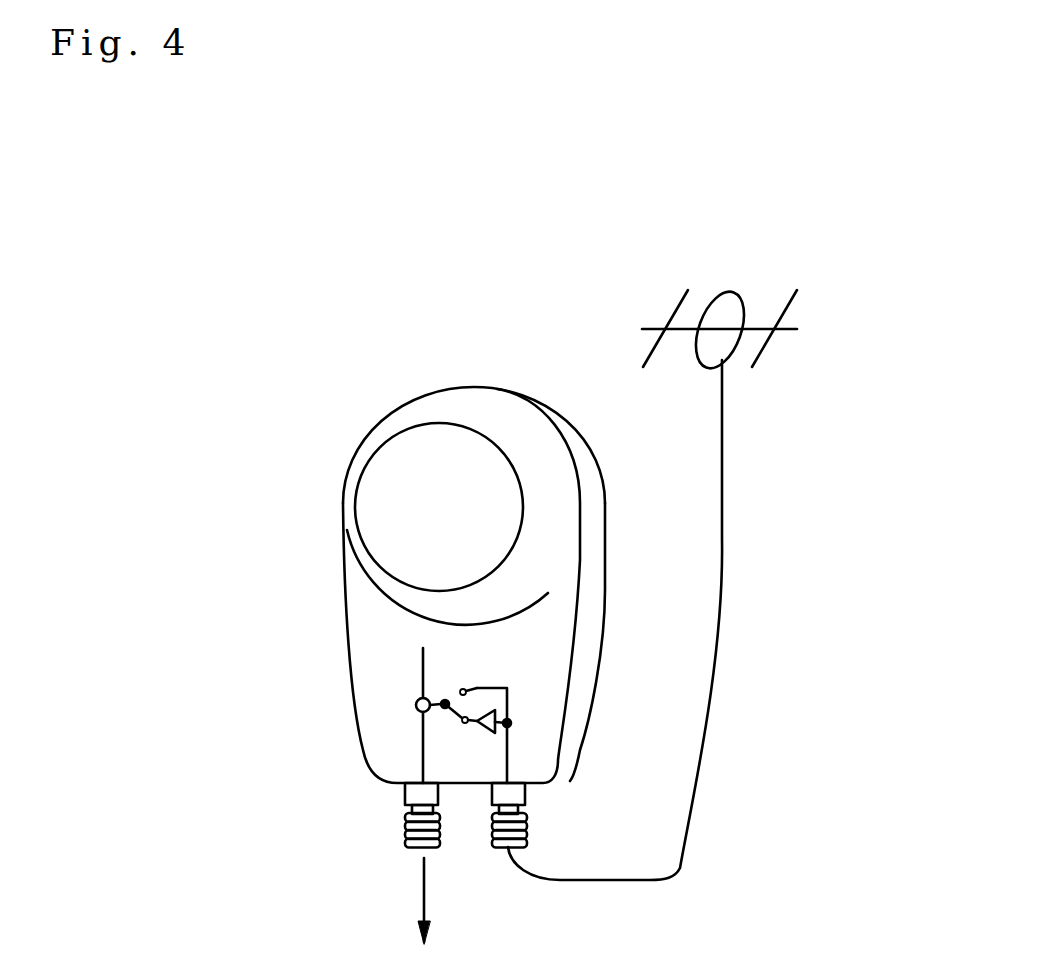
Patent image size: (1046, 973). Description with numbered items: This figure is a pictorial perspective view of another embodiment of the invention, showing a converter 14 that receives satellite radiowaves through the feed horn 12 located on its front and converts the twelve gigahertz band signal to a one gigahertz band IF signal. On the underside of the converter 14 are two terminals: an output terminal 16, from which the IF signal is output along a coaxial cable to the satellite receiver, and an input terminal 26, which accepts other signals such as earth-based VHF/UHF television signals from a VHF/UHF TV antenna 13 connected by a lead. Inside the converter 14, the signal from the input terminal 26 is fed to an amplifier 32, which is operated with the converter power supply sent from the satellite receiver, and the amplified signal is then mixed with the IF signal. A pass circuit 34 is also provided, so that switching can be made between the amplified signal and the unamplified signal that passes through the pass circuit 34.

The feed horn 12 is at (403, 468).
The VHF/UHF TV antenna 13 is at (803, 300).
The converter 14 is at (345, 613).
The output terminal 16 is at (405, 840).
The input terminal 26 is at (528, 828).
The amplifier 32 is at (482, 745).
The pass circuit 34 is at (505, 682).